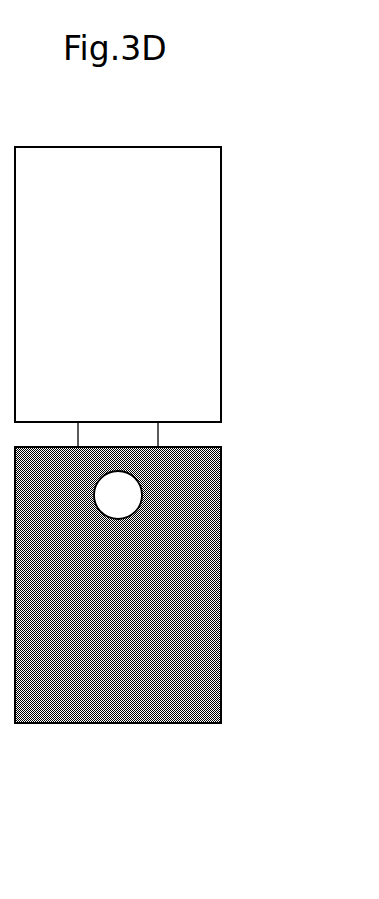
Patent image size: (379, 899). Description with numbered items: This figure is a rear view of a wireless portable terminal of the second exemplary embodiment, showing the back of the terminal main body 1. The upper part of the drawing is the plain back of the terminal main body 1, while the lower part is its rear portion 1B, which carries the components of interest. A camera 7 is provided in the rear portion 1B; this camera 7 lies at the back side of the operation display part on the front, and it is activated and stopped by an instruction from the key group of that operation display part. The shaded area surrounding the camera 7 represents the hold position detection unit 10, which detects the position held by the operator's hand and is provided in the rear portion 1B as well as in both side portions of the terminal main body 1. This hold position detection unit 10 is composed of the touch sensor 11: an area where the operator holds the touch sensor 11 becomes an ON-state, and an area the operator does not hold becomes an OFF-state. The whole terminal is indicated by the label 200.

The terminal main body 1 is at (210, 215).
The camera 7 is at (134, 481).
The hold position detection unit 10 is at (212, 550).
The touch sensor 11 is at (212, 608).
The rear portion 1B is at (195, 713).
The terminal device 200 is at (180, 491).